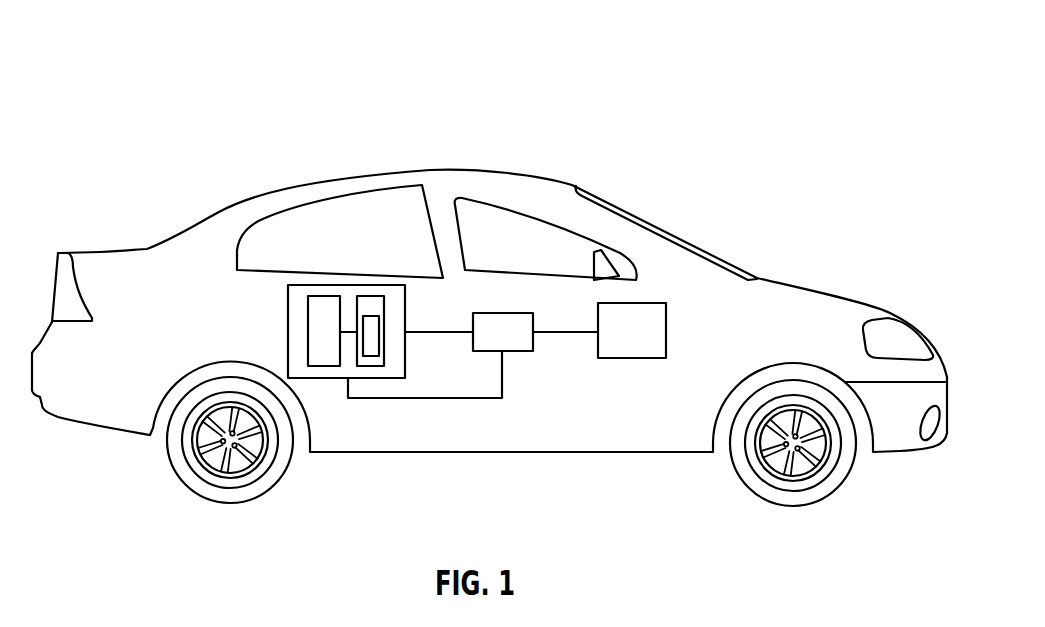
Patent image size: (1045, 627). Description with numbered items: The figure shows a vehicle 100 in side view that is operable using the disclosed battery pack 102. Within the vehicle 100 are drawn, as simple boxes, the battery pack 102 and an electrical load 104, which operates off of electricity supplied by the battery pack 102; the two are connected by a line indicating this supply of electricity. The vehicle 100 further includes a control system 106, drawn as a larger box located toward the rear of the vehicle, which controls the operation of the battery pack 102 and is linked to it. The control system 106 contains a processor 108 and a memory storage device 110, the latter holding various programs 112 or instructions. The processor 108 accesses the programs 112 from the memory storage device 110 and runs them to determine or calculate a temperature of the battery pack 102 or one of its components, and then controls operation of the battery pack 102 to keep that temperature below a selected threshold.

The vehicle 100 is at (716, 45).
The battery pack 102 is at (500, 313).
The electrical load 104 is at (639, 303).
The control system 106 is at (340, 284).
The processor 108 is at (288, 338).
The memory storage device 110 is at (370, 296).
The programs 112 is at (370, 357).